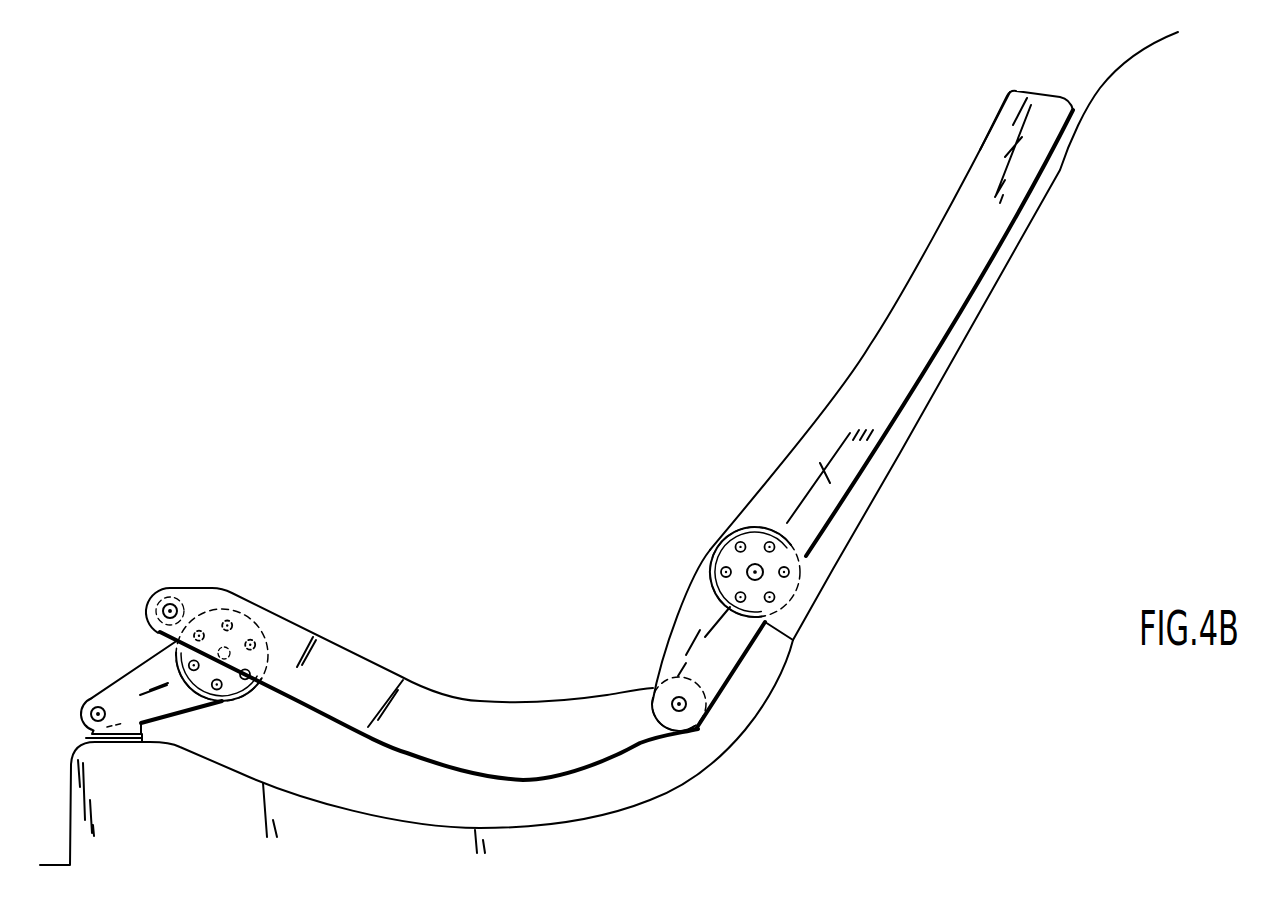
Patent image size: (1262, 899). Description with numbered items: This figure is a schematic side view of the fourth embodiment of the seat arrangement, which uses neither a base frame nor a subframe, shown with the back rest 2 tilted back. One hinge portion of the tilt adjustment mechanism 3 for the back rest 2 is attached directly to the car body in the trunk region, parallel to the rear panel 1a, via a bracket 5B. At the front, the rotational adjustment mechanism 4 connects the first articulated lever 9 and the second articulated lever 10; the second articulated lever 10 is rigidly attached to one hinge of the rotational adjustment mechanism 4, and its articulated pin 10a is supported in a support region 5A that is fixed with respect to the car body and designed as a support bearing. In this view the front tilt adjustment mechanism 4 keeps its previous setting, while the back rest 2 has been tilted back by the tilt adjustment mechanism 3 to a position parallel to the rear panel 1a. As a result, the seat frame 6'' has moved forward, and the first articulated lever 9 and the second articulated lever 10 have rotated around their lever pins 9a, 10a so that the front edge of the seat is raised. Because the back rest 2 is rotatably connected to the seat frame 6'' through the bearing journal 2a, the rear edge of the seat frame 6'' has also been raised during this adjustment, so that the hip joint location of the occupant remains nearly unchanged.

The rear panel 1a is at (933, 391).
The back rest 2 is at (870, 346).
The bearing journal 2a is at (682, 707).
The tilt adjustment mechanism 3 is at (710, 548).
The rotational adjustment mechanism 4 is at (240, 703).
The support region 5A is at (115, 744).
The bracket 5B is at (806, 597).
The seat frame 6'' is at (471, 708).
The first articulated lever 9 is at (193, 606).
The lever pin 9a is at (166, 605).
The second articulated lever 10 is at (130, 666).
The articulated pin 10a is at (88, 703).